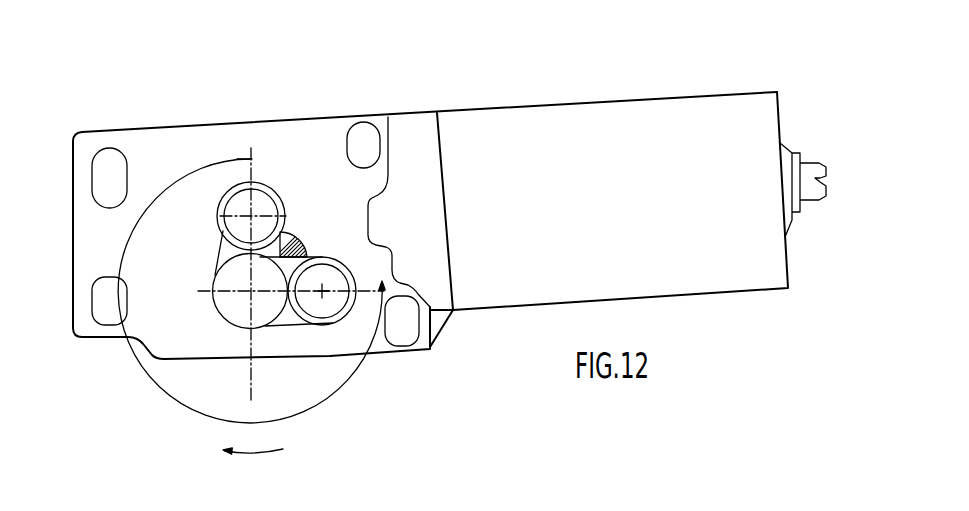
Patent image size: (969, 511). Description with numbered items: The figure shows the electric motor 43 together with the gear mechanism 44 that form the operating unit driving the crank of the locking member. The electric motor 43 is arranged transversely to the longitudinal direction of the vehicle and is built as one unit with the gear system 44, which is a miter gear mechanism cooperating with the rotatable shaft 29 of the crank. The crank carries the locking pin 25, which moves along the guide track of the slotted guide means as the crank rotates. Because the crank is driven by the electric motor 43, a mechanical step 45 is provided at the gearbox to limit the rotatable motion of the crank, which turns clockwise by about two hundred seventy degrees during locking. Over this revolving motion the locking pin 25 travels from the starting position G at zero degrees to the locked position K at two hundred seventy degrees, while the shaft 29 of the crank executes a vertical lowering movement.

The gear mechanism 44 is at (166, 143).
The electric motor 43 is at (677, 107).
The locking pin 25 is at (265, 190).
The rotatable shaft 29 is at (240, 298).
The mechanical step 45 is at (300, 238).
The position K is at (233, 170).
The position G is at (345, 339).